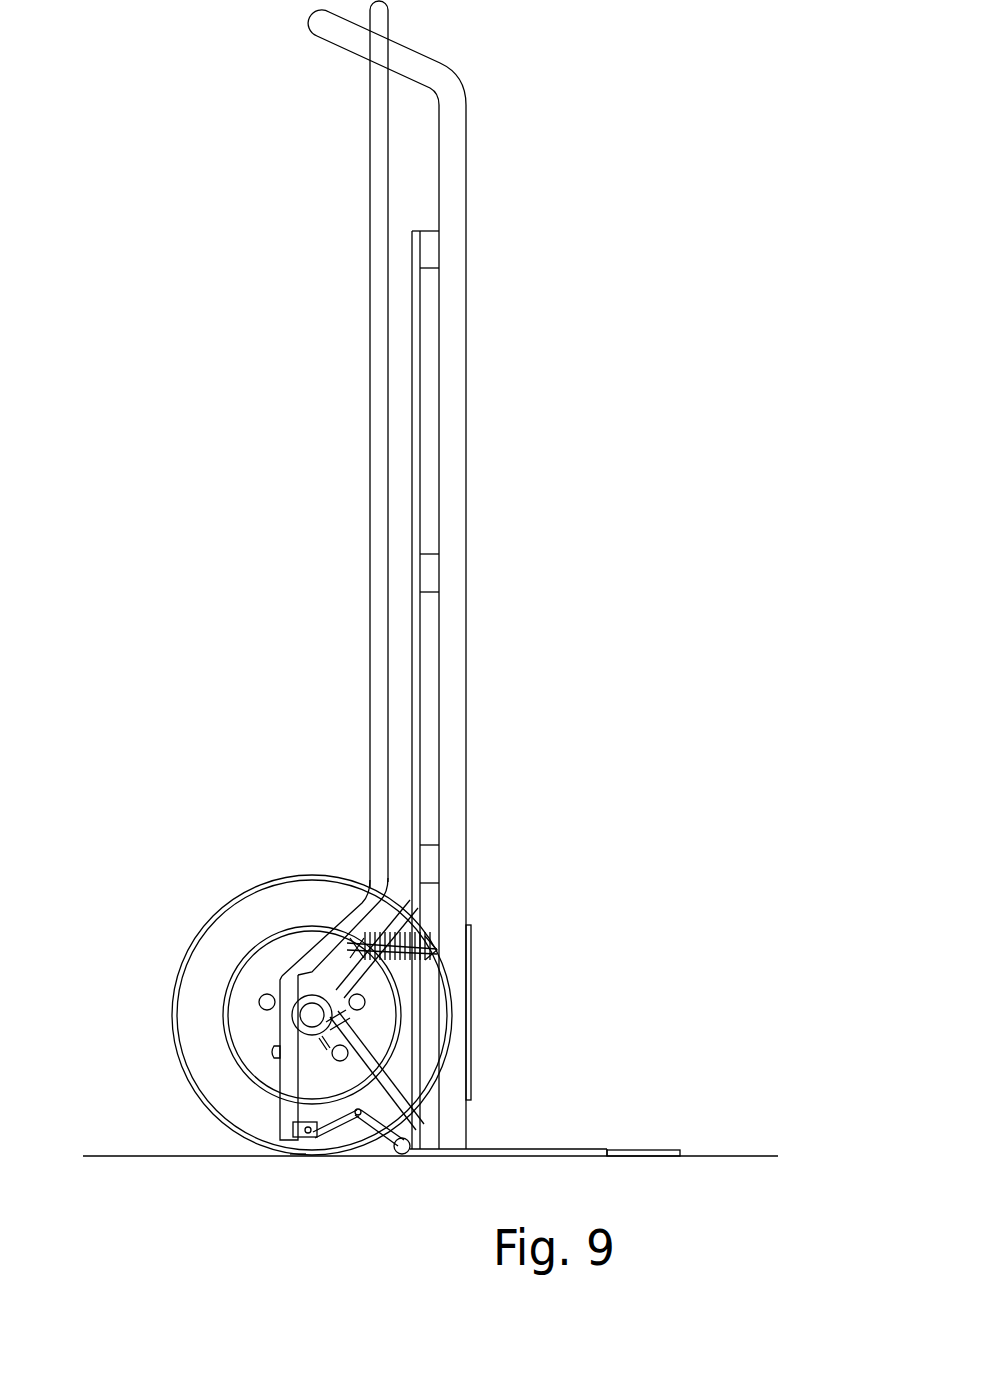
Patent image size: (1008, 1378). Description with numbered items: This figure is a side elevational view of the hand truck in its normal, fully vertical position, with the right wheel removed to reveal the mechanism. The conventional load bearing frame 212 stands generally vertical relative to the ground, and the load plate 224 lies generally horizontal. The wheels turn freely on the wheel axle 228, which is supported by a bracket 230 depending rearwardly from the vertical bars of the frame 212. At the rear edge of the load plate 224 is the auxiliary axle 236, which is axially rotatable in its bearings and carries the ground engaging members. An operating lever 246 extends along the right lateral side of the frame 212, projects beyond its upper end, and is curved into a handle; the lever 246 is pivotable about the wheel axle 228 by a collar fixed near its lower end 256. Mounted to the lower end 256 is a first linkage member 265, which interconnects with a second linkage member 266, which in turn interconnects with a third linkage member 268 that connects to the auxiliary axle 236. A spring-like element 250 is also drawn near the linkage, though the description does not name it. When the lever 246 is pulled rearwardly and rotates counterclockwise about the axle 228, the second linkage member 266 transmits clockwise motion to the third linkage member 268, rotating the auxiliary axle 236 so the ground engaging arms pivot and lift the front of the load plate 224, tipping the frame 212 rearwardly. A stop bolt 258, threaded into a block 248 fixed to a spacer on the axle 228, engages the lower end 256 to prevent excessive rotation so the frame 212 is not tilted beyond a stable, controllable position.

The load bearing frame 212 is at (452, 274).
The load plate 224 is at (635, 1149).
The wheel axle 228 is at (312, 993).
The bracket 230 is at (407, 1043).
The auxiliary axle 236 is at (413, 1122).
The operating lever 246 is at (370, 435).
The block 248 is at (365, 1002).
The spring 250 is at (430, 933).
The lower end of operating lever 256 is at (262, 1172).
The stop bolt 258 is at (275, 1052).
The first linkage member 265 is at (298, 1157).
The second linkage member 266 is at (280, 1105).
The third linkage member 268 is at (378, 1130).